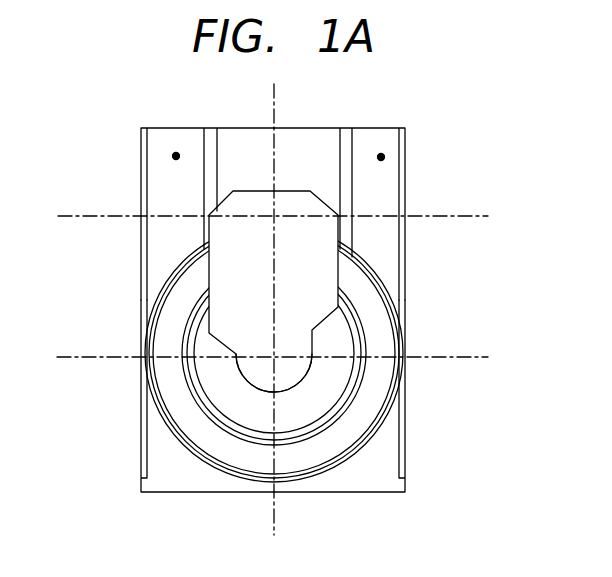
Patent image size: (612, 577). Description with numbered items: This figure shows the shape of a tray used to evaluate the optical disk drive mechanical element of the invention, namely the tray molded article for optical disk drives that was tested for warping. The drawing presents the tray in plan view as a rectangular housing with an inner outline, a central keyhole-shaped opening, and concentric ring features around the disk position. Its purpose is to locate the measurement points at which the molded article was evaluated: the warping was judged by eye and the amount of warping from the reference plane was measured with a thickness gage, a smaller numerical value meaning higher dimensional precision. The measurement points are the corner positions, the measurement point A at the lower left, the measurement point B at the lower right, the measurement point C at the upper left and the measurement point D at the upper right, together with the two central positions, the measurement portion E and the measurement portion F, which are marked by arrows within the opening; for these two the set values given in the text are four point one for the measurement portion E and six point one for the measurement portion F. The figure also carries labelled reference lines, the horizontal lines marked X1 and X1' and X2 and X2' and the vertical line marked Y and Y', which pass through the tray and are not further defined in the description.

The measurement point A is at (136, 500).
The measurement point B is at (411, 500).
The measurement point C is at (139, 124).
The measurement point D is at (416, 122).
The measurement portion E is at (286, 372).
The measurement portion F is at (286, 205).
The section line X1-X1' X1 is at (267, 329).
The section line X1-X1' end X1' is at (487, 329).
The section line X2-X2' X2 is at (267, 188).
The section line X2-X2' end X2' is at (487, 188).
The section line Y-Y' Y is at (302, 304).
The section line Y-Y' end Y' is at (303, 535).